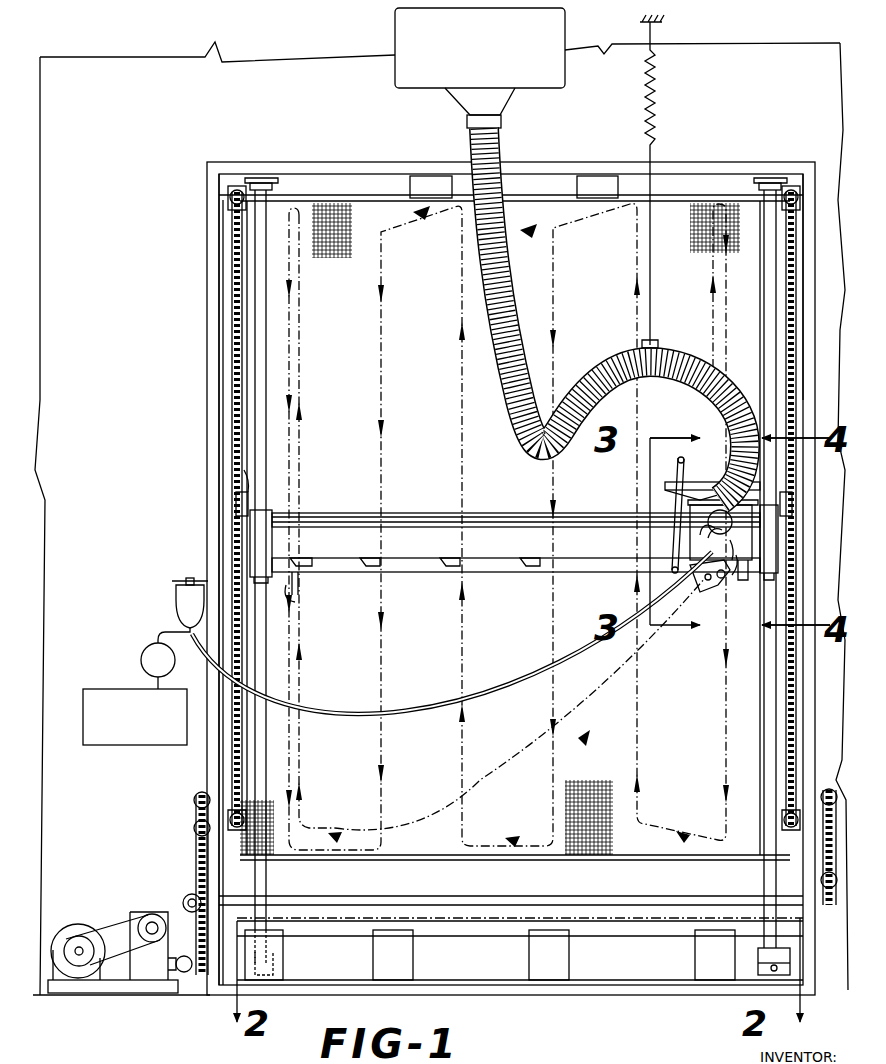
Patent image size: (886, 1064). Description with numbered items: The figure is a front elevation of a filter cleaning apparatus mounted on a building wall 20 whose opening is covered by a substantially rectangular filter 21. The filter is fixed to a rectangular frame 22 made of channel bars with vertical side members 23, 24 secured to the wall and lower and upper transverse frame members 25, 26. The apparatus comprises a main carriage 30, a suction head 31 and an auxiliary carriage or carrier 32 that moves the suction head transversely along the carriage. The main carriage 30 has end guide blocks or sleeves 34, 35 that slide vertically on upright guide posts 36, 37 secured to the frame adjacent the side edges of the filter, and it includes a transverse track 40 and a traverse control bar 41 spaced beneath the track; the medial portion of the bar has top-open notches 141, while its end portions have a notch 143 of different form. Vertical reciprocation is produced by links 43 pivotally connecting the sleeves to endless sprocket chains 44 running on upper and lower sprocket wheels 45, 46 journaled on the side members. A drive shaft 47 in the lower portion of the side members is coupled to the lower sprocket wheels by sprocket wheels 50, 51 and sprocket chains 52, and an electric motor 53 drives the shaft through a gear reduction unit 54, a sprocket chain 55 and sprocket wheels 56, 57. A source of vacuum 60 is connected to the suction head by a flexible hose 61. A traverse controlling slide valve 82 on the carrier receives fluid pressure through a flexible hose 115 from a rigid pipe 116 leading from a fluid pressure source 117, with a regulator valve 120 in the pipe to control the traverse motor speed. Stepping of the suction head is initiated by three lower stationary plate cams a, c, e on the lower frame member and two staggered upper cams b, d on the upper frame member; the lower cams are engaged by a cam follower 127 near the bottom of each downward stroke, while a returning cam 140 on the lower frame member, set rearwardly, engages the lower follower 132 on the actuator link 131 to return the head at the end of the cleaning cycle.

The building wall 20 is at (793, 84).
The filter 21 is at (430, 324).
The frame 22 is at (312, 160).
The side frame member 23 is at (212, 430).
The side frame member 24 is at (812, 188).
The lower transverse frame member 25 is at (556, 986).
The upper transverse frame member 26 is at (705, 168).
The main carriage 30 is at (350, 512).
The suction head 31 is at (666, 487).
The auxiliary carriage 32 is at (668, 532).
The end guide block 34 is at (250, 542).
The end guide block 35 is at (772, 552).
The guide post 36 is at (262, 322).
The guide post 37 is at (770, 310).
The track 40 is at (446, 513).
The traverse control bar 41 is at (438, 572).
The link 43 is at (236, 500).
The sprocket chain 44 is at (232, 394).
The upper sprocket wheel 45 is at (228, 210).
The lower sprocket wheel 46 is at (232, 775).
The drive shaft 47 is at (524, 892).
The sprocket wheel 50 is at (200, 895).
The sprocket wheel 51 is at (194, 800).
The sprocket chain 52 is at (194, 828).
The motive means 53 is at (56, 935).
The gear reduction unit 54 is at (150, 980).
The sprocket chain 55 is at (170, 915).
The sprocket wheel 56 is at (194, 978).
The sprocket wheel 57 is at (184, 898).
The source of vacuum 60 is at (565, 70).
The flexible hose 61 is at (534, 318).
The traverse controlling slide valve 82 is at (690, 570).
The fluid pressure inlet hose 115 is at (452, 700).
The rigid pipe 116 is at (164, 632).
The source of fluid pressure 117 is at (116, 689).
The regulator valve 120 is at (141, 660).
The cam follower 127 is at (725, 578).
The actuator link 131 is at (676, 462).
The lower cam follower 132 is at (748, 582).
The suction-head-returning cam 140 is at (283, 945).
The notch 141 is at (368, 558).
The notch 143 is at (298, 592).
The lower suction-head-shifting cam a is at (695, 955).
The upper suction-head-shifting cam b is at (602, 190).
The lower suction-head-shifting cam c is at (569, 956).
The upper suction-head-shifting cam d is at (434, 190).
The lower suction-head-shifting cam e is at (413, 955).